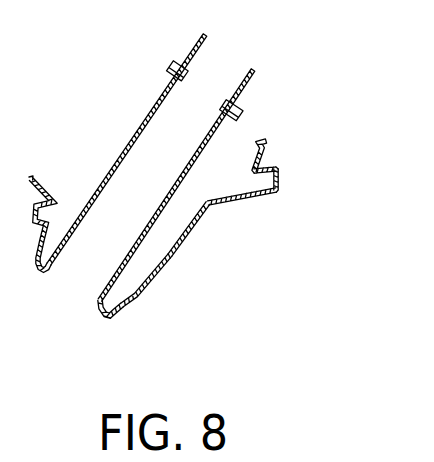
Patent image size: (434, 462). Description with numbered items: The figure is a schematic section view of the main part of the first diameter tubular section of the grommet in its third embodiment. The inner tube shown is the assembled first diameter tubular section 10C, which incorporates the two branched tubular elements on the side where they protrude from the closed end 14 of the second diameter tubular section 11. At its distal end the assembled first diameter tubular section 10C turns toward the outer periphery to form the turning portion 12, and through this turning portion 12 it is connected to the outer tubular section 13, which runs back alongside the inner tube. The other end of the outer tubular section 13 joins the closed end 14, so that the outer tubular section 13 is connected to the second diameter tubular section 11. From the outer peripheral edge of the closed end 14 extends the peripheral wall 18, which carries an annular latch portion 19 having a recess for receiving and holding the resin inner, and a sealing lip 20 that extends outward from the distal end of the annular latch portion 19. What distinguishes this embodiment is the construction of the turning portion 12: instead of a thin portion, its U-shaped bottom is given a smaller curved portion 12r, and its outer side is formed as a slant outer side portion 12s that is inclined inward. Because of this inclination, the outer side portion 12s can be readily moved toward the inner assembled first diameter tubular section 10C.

The assembled first diameter tubular section 10C is at (102, 181).
The second diameter tubular section 11 is at (283, 182).
The turning portion 12 is at (100, 315).
The smaller curved portion 12r is at (98, 319).
The slant outer side portion 12s is at (134, 301).
The outer tubular section 13 is at (178, 248).
The closed end 14 is at (238, 202).
The peripheral wall 18 is at (321, 156).
The annular latch portion 19 is at (280, 172).
The sealing lip 20 is at (270, 143).